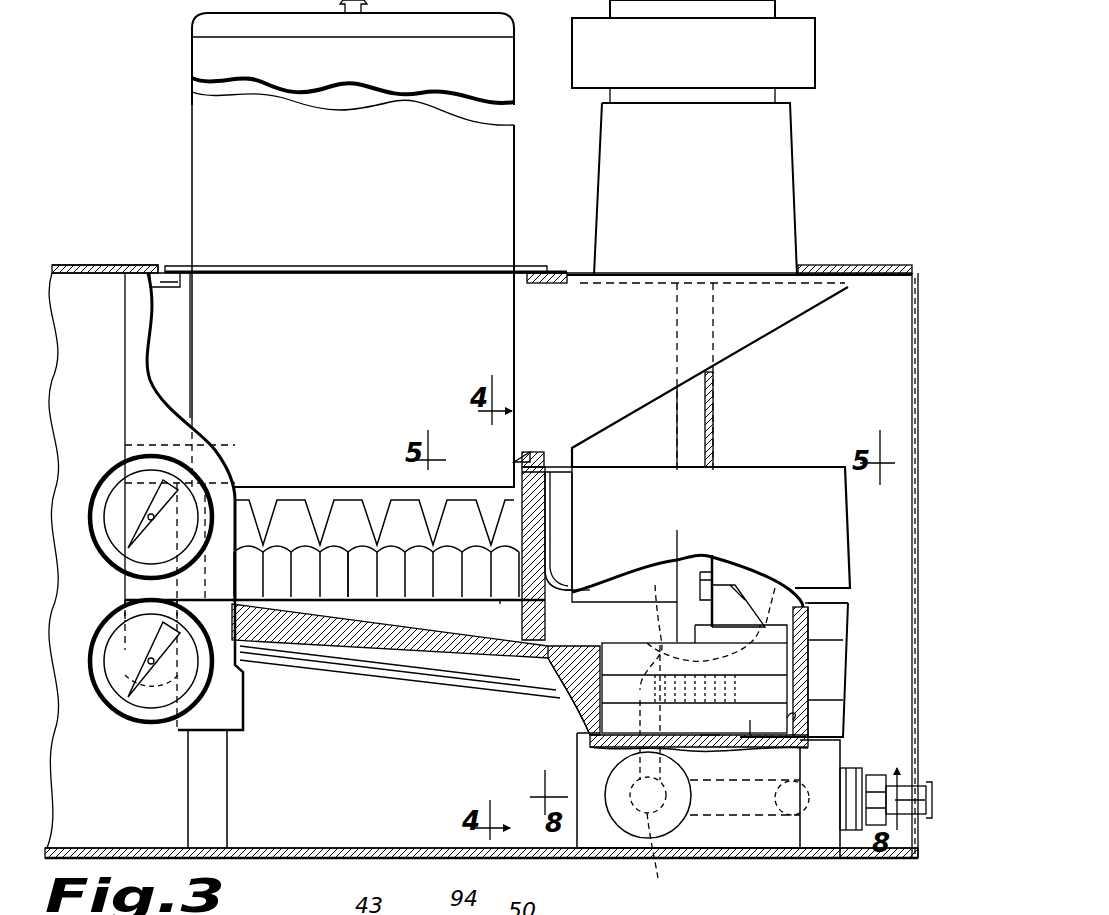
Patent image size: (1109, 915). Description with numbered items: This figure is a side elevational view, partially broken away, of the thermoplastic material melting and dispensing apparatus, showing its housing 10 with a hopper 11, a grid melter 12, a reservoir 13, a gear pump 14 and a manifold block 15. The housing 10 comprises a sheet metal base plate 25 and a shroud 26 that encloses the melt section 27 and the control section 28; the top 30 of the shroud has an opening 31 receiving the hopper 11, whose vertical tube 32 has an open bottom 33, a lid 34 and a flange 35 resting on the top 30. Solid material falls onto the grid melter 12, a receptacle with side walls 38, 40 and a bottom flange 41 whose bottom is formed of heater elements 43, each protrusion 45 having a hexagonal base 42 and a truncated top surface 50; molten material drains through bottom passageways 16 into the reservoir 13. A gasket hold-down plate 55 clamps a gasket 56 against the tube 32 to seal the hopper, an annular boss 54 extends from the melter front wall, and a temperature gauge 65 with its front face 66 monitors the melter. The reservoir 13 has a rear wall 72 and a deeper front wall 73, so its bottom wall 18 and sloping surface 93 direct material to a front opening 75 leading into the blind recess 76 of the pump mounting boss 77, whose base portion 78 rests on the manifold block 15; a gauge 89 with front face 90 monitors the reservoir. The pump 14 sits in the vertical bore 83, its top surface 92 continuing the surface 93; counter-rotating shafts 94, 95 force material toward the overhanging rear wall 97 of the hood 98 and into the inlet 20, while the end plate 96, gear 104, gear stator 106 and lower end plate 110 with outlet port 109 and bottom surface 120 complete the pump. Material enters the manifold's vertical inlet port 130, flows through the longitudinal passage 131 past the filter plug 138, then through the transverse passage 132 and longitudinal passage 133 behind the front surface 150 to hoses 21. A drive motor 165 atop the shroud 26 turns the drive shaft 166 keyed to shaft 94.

The housing 10 is at (955, 259).
The hopper 11 is at (348, 243).
The grid melter 12 is at (376, 499).
The reservoir 13 is at (416, 648).
The gear pump 14 is at (821, 670).
The manifold block 15 is at (735, 845).
The bottom passageways 16 is at (364, 557).
The sloping bottom wall 18 is at (425, 647).
The pump inlet 20 is at (796, 587).
The hoses or conduits 21 is at (936, 787).
The base plate 25 is at (420, 827).
The shroud 26 is at (916, 520).
The melt section 27 is at (533, 863).
The control section 28 is at (80, 284).
The top of the shroud 30 is at (835, 265).
The opening 31 is at (522, 276).
The vertical tube 32 is at (514, 160).
The bottom of the hopper 33 is at (283, 485).
The lid 34 is at (372, 34).
The flange 35 is at (325, 267).
The side wall 38 is at (552, 517).
The side wall 40 is at (128, 584).
The bottom flange 41 is at (566, 579).
The base 42 is at (422, 600).
The heater elements 43 is at (378, 489).
The protrusions 45 is at (376, 553).
The topmost end surfaces 50 is at (465, 484).
The annular boss 54 is at (739, 431).
The gasket hold-down plate 55 is at (549, 452).
The gasket 56 is at (527, 447).
The temperature measuring gauge 65 is at (139, 504).
The front face 66 is at (133, 505).
The rear wall 72 is at (140, 678).
The front wall 73 is at (505, 597).
The front opening 75 is at (545, 657).
The blind recess 76 is at (806, 618).
The pump mounting boss 77 is at (830, 611).
The base portion 78 is at (570, 720).
The vertical bore 83 is at (793, 722).
The temperature measuring gauge 89 is at (125, 717).
The front face 90 is at (110, 669).
The top surface 92 is at (655, 597).
The sloping surface 93 is at (556, 648).
The drive shaft 94 is at (688, 552).
The idler shaft 95 is at (718, 575).
The end plate 96 is at (811, 657).
The overhanging rear wall 97 is at (773, 582).
The overhanging hood 98 is at (748, 575).
The gear 104 is at (694, 679).
The gear stator 106 is at (806, 690).
The outlet port 109 is at (606, 743).
The lower end plate 110 is at (750, 721).
The bottom surface 120 is at (705, 747).
The vertical inlet port 130 is at (661, 819).
The longitudinal passage 131 is at (672, 852).
The transverse passage 132 is at (750, 827).
The longitudinal passage 133 is at (799, 809).
The filter plug 138 is at (680, 827).
The front surface 150 is at (842, 753).
The drive motor 165 is at (858, 105).
The drive shaft 166 is at (715, 389).